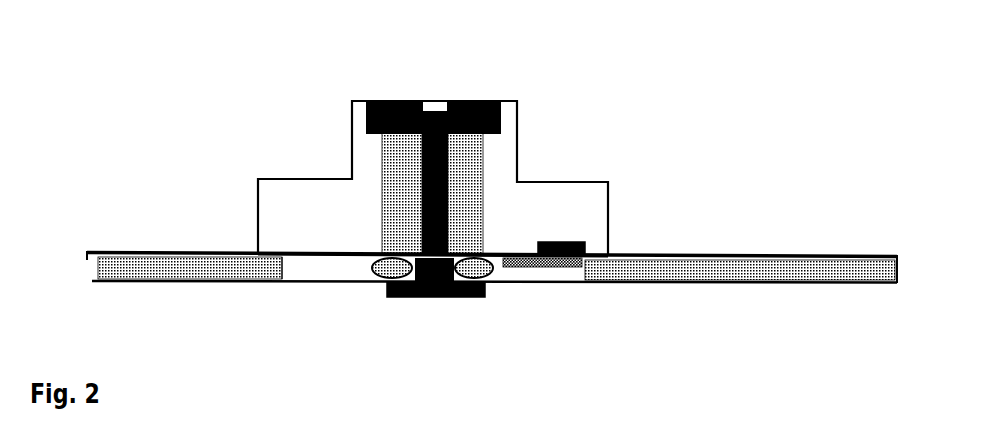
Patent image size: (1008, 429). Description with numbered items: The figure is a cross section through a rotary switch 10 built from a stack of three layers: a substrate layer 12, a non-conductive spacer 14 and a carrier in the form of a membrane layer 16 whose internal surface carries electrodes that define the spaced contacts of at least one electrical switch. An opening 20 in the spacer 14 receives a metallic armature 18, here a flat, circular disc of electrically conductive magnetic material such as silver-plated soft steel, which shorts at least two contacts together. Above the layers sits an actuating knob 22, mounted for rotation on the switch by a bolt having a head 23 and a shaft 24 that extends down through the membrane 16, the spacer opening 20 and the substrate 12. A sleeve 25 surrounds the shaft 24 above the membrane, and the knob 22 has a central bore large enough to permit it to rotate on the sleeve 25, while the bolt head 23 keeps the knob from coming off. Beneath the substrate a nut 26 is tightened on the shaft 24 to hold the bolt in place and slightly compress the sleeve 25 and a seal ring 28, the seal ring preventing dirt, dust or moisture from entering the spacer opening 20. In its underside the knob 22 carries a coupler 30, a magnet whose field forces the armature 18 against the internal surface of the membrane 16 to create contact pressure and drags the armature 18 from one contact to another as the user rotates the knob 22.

The rotary switch 10 is at (159, 240).
The substrate layer 12 is at (770, 283).
The non-conductive spacer 14 is at (647, 277).
The membrane layer 16 is at (613, 262).
The metallic armature 18 is at (547, 262).
The opening 20 is at (283, 267).
The actuating knob 22 is at (352, 128).
The bolt head 23 is at (463, 102).
The shaft 24 is at (446, 182).
The sleeve 25 is at (470, 208).
The nut 26 is at (407, 298).
The seal ring 28 is at (476, 270).
The coupler 30 is at (583, 242).